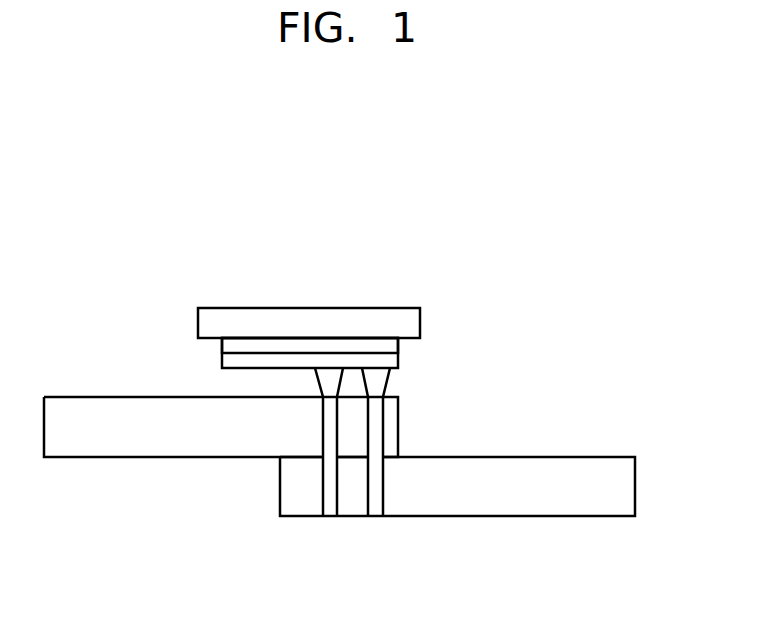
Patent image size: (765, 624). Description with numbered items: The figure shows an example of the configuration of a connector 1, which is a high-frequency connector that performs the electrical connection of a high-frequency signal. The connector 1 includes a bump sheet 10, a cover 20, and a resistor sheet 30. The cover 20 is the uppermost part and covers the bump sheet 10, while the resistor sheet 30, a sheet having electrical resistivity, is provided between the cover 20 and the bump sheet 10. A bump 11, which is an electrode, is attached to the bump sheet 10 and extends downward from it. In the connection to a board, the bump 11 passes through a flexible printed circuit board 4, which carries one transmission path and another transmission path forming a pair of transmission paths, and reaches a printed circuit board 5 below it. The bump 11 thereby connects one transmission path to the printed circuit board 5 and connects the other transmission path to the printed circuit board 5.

The connector 1 is at (385, 233).
The cover 20 is at (207, 310).
The bump sheet 10 is at (222, 362).
The resistor sheet 30 is at (400, 343).
The bump 11 is at (388, 381).
The flexible printed circuit board 4 is at (73, 457).
The printed circuit board 5 is at (459, 516).